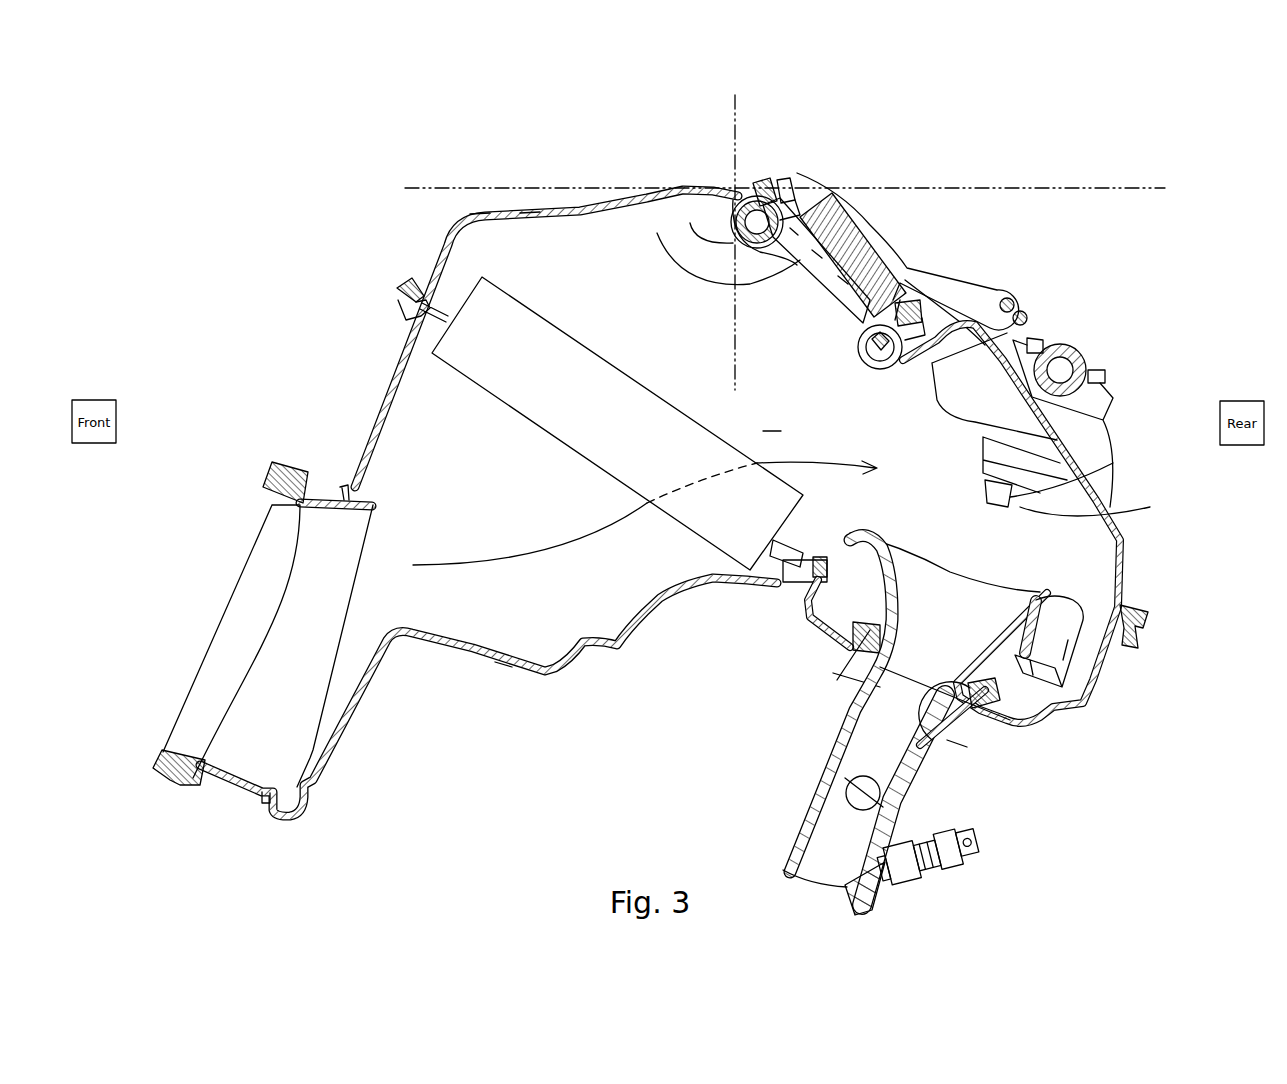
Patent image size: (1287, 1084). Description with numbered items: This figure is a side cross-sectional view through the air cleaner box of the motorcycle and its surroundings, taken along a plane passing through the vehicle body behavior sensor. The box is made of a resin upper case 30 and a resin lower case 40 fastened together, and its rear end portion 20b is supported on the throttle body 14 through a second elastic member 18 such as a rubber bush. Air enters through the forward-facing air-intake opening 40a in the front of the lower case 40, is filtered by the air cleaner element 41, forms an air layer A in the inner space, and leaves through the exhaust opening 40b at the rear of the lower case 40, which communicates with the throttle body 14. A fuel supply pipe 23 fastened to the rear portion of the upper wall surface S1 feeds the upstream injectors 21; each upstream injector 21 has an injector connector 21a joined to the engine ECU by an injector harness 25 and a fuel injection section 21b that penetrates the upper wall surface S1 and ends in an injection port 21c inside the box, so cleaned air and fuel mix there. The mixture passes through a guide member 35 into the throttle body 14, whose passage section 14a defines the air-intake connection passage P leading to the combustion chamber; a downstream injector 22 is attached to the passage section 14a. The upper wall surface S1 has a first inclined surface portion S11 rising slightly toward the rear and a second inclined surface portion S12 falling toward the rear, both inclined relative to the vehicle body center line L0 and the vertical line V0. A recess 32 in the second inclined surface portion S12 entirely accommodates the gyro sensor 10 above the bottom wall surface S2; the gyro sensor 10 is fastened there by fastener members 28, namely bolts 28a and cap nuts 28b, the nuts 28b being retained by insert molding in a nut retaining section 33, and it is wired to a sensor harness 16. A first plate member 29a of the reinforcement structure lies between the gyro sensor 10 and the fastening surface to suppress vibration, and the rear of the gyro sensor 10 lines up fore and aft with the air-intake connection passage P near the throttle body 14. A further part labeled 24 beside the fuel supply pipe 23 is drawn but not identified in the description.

The gyro sensor 10 is at (861, 206).
The throttle body 14 is at (923, 808).
The passage section 14a is at (817, 797).
The sensor harness 16 is at (975, 305).
The second elastic member 18 is at (968, 728).
The rear end portion 20b is at (833, 637).
The upstream injector 21 is at (1041, 495).
The injector connector 21a is at (1068, 350).
The fuel injection section 21b is at (1037, 495).
The injection port 21c is at (1087, 512).
The downstream injector 22 is at (980, 860).
The fuel supply pipe 23 is at (1053, 358).
The tab 24 is at (1113, 383).
The injector harness 25 is at (1028, 307).
The fastener members 28 is at (883, 104).
The bolts 28a is at (790, 182).
The nuts 28b is at (820, 195).
The first plate member 29a is at (657, 233).
The upper case 30 is at (430, 250).
The recess 32 is at (997, 290).
The nut retaining section 33 is at (690, 223).
The guide member 35 is at (1043, 592).
The lower case 40 is at (376, 394).
The air-intake opening 40a is at (248, 612).
The exhaust opening 40b is at (935, 757).
The air cleaner element 41 is at (566, 330).
The air layer A is at (430, 385).
The vehicle body center line L0 is at (1128, 190).
The air-intake connection passage P is at (883, 745).
The upper wall surface S1 is at (480, 197).
The first inclined surface portion S11 is at (525, 207).
The second inclined surface portion S12 is at (847, 317).
The bottom wall surface S2 is at (503, 668).
The vertical line V0 is at (733, 153).